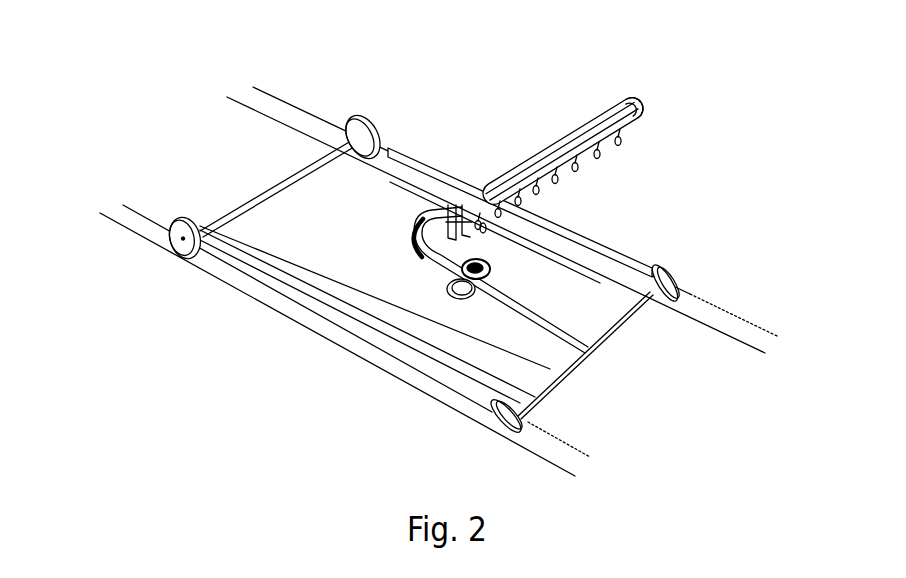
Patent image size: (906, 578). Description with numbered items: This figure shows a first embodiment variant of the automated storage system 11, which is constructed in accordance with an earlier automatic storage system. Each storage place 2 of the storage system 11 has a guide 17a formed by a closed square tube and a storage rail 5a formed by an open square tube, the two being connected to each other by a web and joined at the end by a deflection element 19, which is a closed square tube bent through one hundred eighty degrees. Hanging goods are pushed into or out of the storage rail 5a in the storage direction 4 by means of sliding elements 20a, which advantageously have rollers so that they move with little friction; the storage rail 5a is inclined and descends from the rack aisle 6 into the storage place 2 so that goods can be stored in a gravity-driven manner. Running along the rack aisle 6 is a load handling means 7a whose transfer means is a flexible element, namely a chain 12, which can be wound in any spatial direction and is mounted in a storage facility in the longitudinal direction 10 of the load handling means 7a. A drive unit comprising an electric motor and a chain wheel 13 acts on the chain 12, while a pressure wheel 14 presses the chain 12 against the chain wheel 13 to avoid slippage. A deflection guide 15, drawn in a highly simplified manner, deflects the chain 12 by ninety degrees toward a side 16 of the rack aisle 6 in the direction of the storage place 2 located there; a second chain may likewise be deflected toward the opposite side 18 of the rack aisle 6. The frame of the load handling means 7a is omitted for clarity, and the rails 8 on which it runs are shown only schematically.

The storage place 2 is at (490, 225).
The storage direction 4 is at (568, 113).
The storage rail 5a is at (594, 123).
The rack aisle 6 is at (688, 403).
The load handling means 7a is at (688, 262).
The rail 8 is at (427, 282).
The longitudinal direction 10 is at (237, 173).
The automated storage system 11 is at (133, 77).
The chain 12 is at (433, 256).
The chain wheel 13 is at (490, 269).
The pressure wheel 14 is at (463, 287).
The deflection guide 15 is at (404, 239).
The side 16 is at (440, 158).
The guide 17a is at (562, 152).
The side 18 is at (223, 297).
The deflection element 19 is at (635, 106).
The sliding elements 20a is at (598, 160).